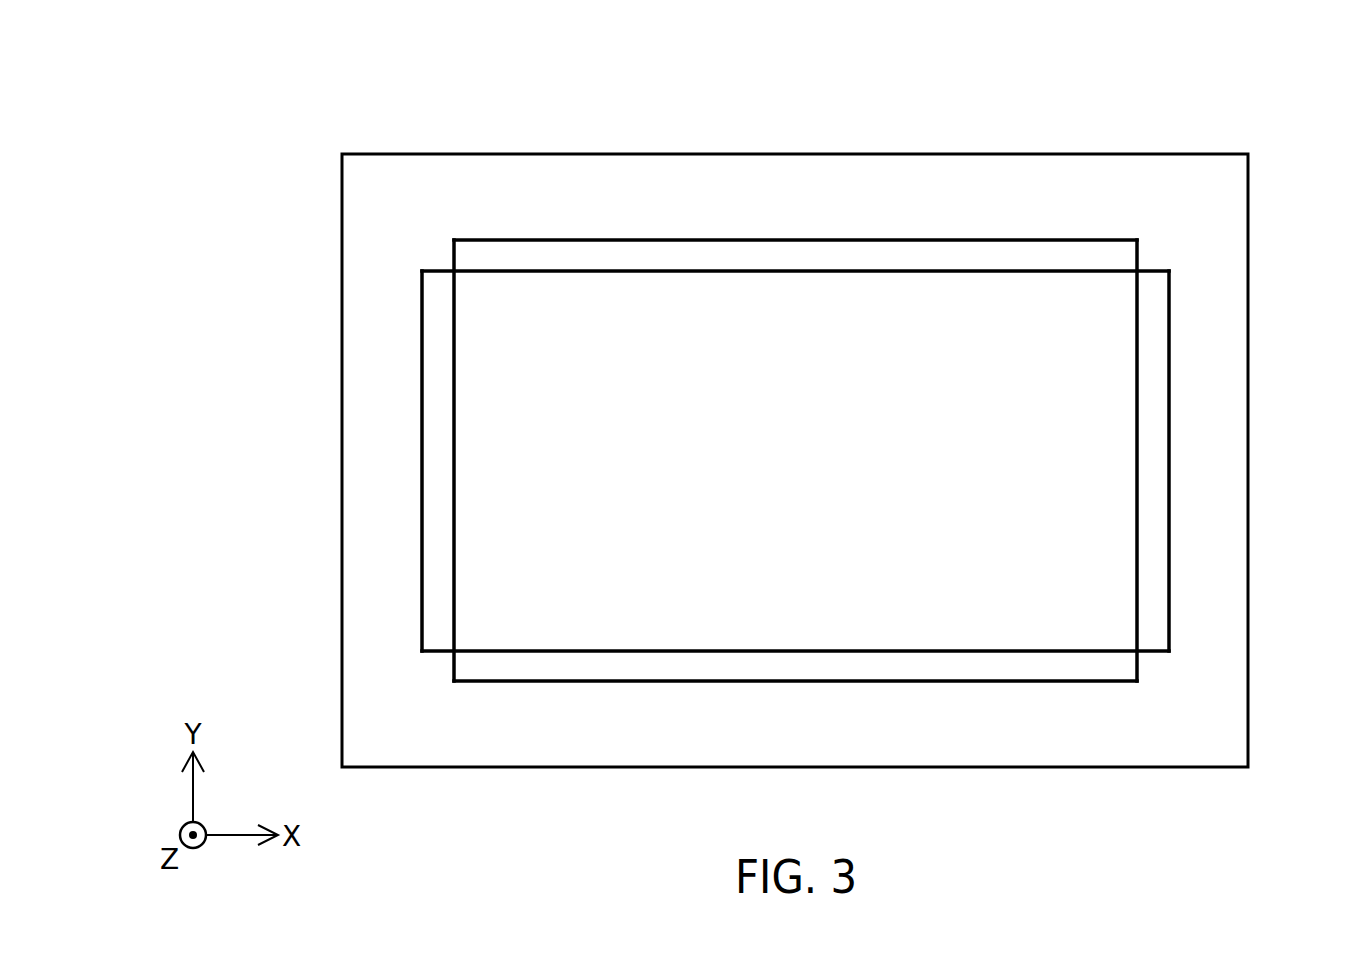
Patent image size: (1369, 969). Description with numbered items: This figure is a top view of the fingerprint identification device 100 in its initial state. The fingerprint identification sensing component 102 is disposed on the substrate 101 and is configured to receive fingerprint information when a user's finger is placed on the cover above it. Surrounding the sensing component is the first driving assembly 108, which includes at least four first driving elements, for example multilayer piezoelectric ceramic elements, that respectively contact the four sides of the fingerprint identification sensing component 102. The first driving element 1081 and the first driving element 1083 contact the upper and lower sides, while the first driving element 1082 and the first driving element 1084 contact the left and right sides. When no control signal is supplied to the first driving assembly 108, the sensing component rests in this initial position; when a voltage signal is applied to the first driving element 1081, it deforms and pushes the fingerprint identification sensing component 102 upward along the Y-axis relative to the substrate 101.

The fingerprint identification device 100 is at (180, 82).
The substrate 101 is at (378, 568).
The fingerprint identification sensing component 102 is at (1015, 385).
The first driving assembly 108 is at (172, 210).
The first driving element 1081 is at (975, 665).
The first driving element 1082 is at (440, 418).
The first driving element 1083 is at (799, 257).
The first driving element 1084 is at (1152, 521).